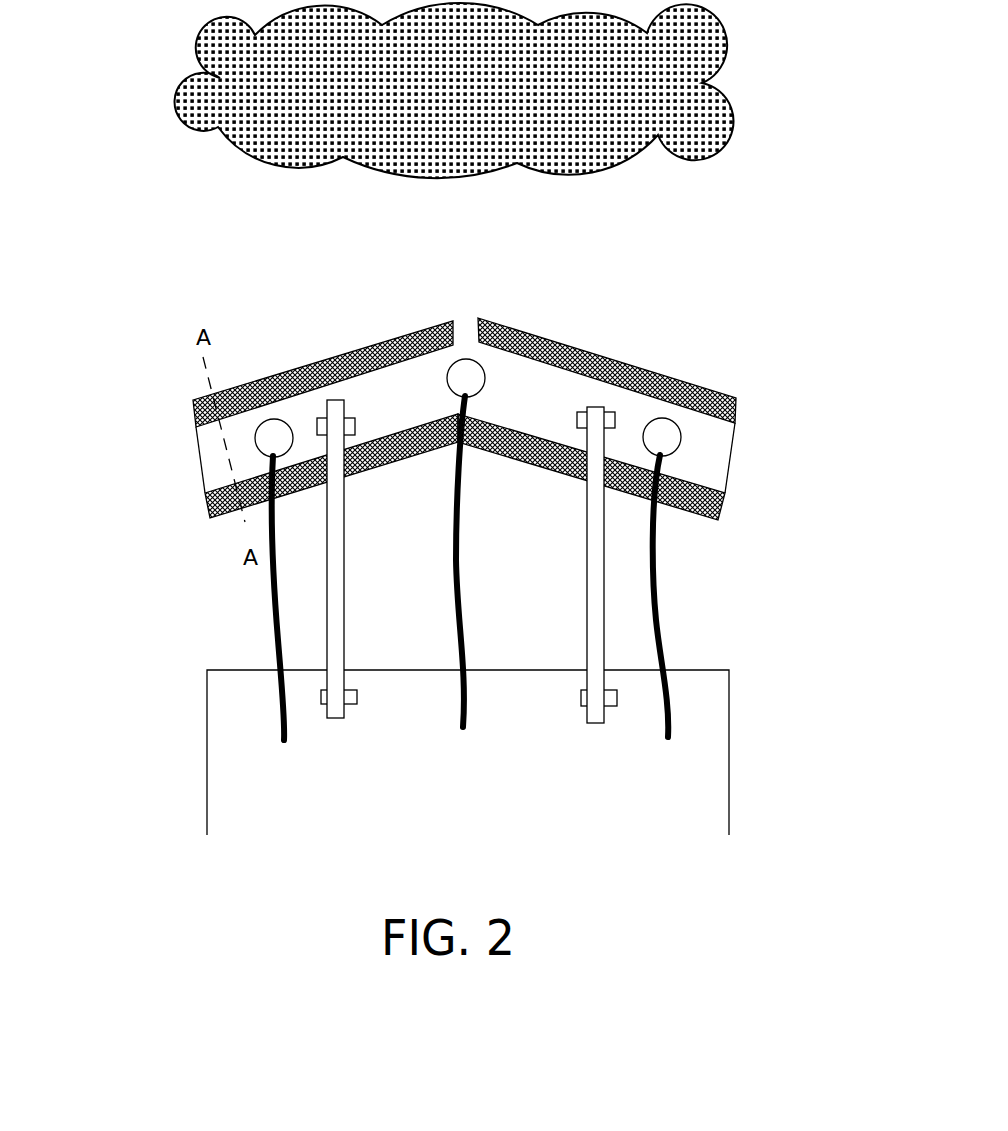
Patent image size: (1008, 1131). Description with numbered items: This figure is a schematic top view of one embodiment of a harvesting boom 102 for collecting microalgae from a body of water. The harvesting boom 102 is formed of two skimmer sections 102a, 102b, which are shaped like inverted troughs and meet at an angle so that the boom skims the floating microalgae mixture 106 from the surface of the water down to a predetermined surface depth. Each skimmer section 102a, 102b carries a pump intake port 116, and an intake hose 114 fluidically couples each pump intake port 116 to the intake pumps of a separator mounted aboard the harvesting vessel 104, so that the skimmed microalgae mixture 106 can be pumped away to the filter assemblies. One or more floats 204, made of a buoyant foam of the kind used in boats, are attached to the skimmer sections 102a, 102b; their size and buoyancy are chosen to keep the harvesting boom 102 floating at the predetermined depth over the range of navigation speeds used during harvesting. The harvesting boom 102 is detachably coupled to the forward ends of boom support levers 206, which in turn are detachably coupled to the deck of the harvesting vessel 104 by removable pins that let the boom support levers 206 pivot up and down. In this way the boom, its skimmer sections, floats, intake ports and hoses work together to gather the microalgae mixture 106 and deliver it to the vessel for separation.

The harvesting boom 102 is at (461, 506).
The skimmer section 102a is at (198, 453).
The skimmer section 102b is at (732, 463).
The harvesting vessel 104 is at (468, 752).
The microalgae mixture 106 is at (227, 98).
The intake hose 114 is at (272, 622).
The pump intake port 116 is at (270, 437).
The float 204 is at (338, 358).
The boom support lever 206 is at (344, 540).